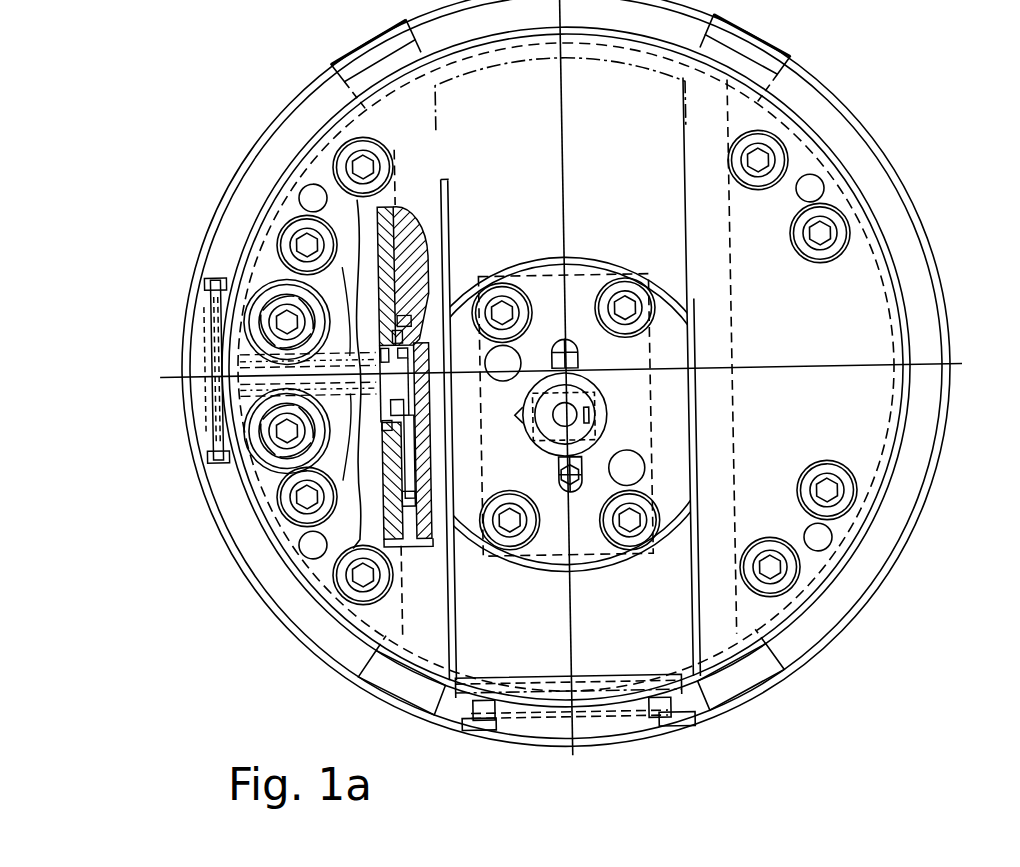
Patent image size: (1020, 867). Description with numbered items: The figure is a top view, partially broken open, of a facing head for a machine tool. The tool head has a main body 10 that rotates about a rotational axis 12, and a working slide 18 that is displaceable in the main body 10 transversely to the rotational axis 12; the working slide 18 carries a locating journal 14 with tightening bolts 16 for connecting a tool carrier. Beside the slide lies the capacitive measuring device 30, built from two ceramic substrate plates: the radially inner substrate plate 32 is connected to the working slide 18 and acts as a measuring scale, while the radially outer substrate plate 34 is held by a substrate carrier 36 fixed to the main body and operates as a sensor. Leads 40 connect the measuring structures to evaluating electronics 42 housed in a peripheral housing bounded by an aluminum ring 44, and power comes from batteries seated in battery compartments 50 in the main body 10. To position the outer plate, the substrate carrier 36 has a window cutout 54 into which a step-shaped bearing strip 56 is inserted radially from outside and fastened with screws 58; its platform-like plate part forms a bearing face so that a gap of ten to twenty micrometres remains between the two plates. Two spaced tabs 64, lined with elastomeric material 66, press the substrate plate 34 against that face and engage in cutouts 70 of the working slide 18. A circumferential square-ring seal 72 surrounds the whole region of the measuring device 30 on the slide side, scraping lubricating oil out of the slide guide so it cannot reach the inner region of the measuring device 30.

The main body 10 is at (855, 340).
The rotational axis 12 is at (660, 348).
The locating journal 14 is at (543, 452).
The tightening bolts 16 is at (517, 416).
The working slide 18 is at (668, 403).
The capacitive measuring device 30 is at (443, 300).
The radially inner substrate plate 32 is at (438, 550).
The radially outer substrate plate 34 is at (432, 335).
The substrate carrier 36 is at (405, 200).
The leads 40 is at (350, 303).
The evaluating electronics 42 is at (186, 352).
The aluminum ring 44 is at (212, 218).
The battery compartments 50 is at (276, 302).
The window cutout 54 is at (428, 383).
The bearing strip 56 is at (353, 407).
The screws 58 is at (356, 500).
The tabs 64 is at (428, 400).
The elastomeric material 66 is at (423, 363).
The cutouts 70 is at (421, 470).
The square-ring seal 72 is at (419, 548).